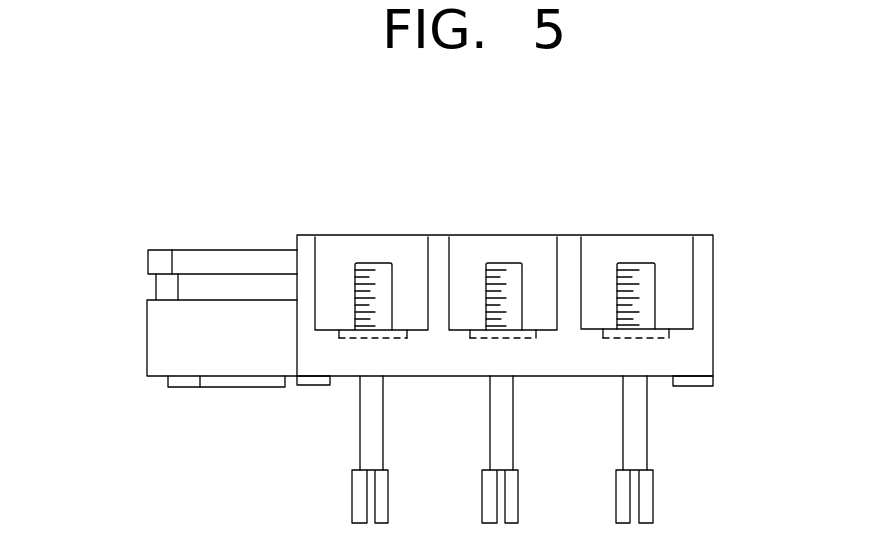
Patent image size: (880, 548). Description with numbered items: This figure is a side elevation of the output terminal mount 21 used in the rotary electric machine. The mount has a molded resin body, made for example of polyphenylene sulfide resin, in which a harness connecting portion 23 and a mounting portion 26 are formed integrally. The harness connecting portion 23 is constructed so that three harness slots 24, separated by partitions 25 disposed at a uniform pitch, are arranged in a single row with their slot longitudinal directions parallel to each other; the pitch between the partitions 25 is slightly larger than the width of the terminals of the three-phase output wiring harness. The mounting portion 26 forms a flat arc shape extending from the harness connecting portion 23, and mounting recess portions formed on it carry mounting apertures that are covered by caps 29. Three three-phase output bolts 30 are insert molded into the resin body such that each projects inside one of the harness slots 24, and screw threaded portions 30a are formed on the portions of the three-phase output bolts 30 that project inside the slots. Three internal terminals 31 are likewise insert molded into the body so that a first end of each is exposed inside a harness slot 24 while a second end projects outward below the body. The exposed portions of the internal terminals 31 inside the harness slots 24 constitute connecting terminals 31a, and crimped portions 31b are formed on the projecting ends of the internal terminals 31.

The output terminal mount 21 is at (117, 125).
The harness connecting portion 23 is at (723, 267).
The harness slot 24 is at (503, 248).
The partition 25 is at (571, 248).
The mounting portion 26 is at (138, 342).
The cap 29 is at (229, 261).
The three-phase output bolt 30 is at (537, 236).
The screw threaded portion 30a is at (648, 300).
The internal terminal 31 is at (532, 426).
The connecting terminal 31a is at (365, 339).
The crimped portion 31b is at (652, 495).